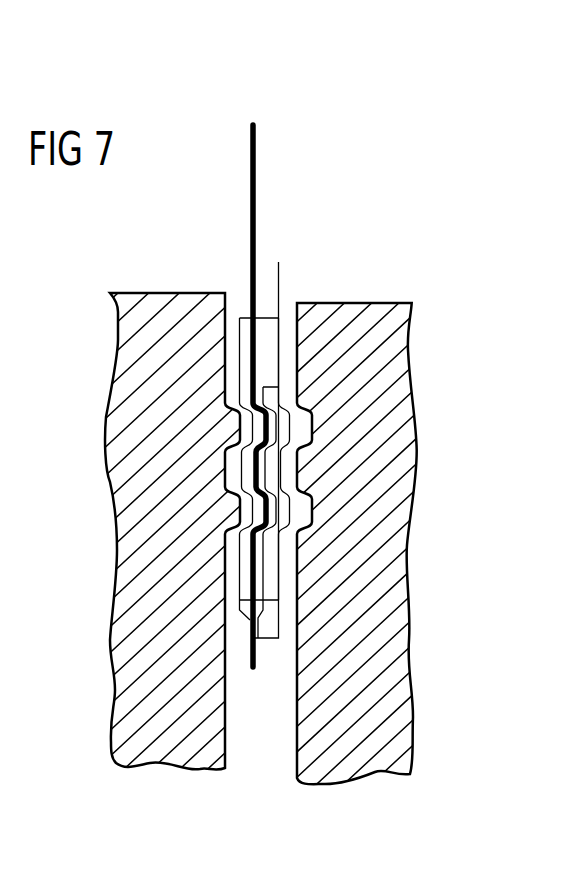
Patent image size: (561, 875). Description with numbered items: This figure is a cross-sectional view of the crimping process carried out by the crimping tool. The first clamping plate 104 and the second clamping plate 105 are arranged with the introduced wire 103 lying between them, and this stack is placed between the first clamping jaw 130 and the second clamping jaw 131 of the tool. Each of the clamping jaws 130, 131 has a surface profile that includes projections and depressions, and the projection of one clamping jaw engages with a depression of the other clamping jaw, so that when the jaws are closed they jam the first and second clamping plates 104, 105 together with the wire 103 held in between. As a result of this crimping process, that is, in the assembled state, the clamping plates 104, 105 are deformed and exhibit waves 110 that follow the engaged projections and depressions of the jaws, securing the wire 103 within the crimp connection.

The wire 103 is at (256, 175).
The first clamping plate 104 is at (267, 582).
The second clamping plate 105 is at (247, 580).
The waves 110 is at (290, 432).
The first clamping jaw 130 is at (358, 307).
The second clamping jaw 131 is at (148, 298).